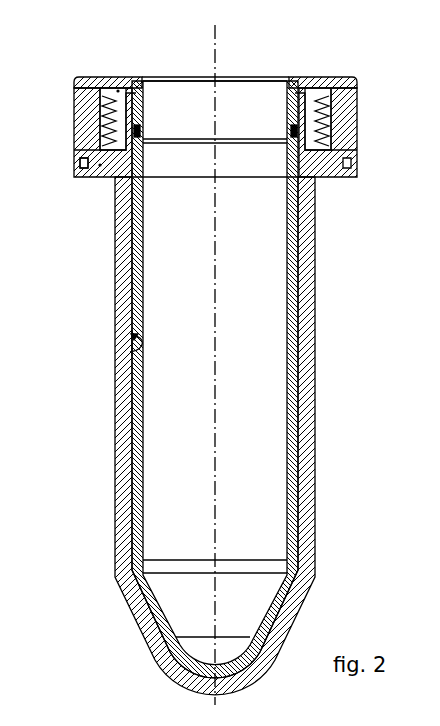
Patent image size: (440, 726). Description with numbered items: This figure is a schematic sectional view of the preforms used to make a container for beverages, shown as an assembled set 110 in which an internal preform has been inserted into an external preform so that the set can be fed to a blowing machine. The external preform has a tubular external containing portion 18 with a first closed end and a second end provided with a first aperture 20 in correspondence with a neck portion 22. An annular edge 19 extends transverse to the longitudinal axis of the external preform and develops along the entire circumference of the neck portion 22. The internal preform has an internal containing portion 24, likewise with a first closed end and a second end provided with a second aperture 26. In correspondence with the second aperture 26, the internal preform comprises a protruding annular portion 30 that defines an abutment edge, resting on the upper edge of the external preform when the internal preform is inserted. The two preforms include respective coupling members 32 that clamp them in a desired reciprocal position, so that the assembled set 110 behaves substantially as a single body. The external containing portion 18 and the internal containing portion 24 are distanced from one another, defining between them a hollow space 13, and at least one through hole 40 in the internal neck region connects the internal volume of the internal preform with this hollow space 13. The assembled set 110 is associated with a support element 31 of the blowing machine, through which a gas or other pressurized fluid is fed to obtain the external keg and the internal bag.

The assembled set 110 is at (384, 138).
The external containing portion 18 is at (316, 336).
The internal containing portion 24 is at (298, 385).
The neck portion 22 is at (111, 182).
The support element 31 is at (308, 77).
The protruding annular portion 30 is at (118, 90).
The coupling members 32 is at (332, 101).
The through hole 40 is at (321, 135).
The first aperture 20 is at (138, 122).
The second aperture 26 is at (304, 104).
The annular edge 19 is at (100, 166).
The hollow space 13 is at (130, 352).